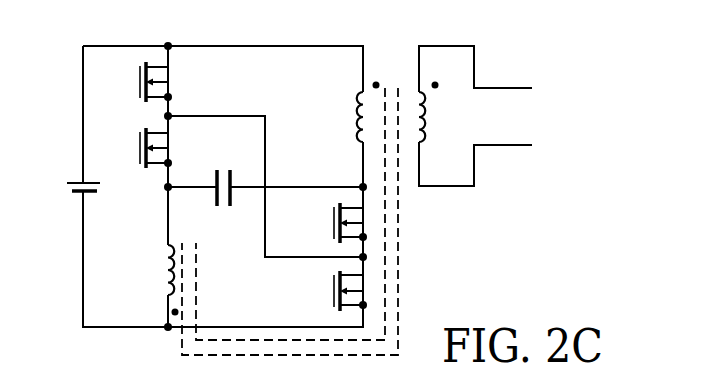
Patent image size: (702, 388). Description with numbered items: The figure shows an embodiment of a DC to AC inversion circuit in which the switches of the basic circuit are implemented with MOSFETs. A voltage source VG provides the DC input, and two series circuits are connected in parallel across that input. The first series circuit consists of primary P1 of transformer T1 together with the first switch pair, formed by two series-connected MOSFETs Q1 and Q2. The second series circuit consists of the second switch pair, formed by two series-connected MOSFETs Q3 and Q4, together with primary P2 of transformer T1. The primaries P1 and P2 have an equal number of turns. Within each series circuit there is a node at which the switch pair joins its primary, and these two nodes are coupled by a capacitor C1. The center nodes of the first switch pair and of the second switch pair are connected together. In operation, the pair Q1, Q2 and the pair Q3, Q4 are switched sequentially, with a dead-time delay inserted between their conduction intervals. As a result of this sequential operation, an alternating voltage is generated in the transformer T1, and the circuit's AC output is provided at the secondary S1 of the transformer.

The MOSFET Q1 is at (330, 291).
The MOSFET Q2 is at (330, 223).
The MOSFET Q3 is at (135, 148).
The MOSFET Q4 is at (134, 82).
The capacitor C1 is at (224, 170).
The primary P1 is at (353, 112).
The primary P2 is at (150, 280).
The secondary S1 is at (475, 116).
The transformer T1 is at (297, 187).
The voltage source VG is at (63, 181).
The AC output AC is at (510, 116).